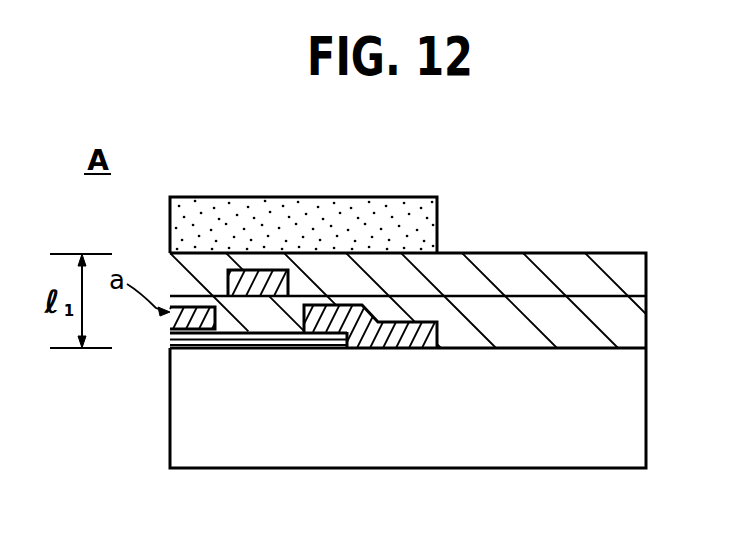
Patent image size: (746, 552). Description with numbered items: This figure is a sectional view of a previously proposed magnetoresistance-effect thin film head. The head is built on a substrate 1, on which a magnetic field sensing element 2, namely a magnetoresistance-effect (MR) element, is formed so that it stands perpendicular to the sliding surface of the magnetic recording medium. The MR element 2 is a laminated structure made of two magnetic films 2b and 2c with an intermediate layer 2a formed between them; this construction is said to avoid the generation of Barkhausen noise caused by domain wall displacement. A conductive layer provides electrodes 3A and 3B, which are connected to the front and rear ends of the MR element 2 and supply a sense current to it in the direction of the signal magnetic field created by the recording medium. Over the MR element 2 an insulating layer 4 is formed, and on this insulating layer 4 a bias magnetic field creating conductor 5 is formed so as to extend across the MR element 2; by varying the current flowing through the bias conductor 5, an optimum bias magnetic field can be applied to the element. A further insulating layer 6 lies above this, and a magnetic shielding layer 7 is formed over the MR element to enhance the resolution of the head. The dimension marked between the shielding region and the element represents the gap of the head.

The substrate 1 is at (628, 433).
The magnetic field sensing element 2 is at (263, 389).
The intermediate layer 2a is at (278, 336).
The magnetic film 2b is at (210, 397).
The magnetic film 2c is at (240, 338).
The electrode 3A is at (168, 326).
The electrode 3B is at (415, 338).
The insulating layer 4 is at (490, 312).
The bias magnetic field creating conductor 5 is at (243, 271).
The insulating layer 6 is at (378, 270).
The magnetic shielding layer 7 is at (280, 212).